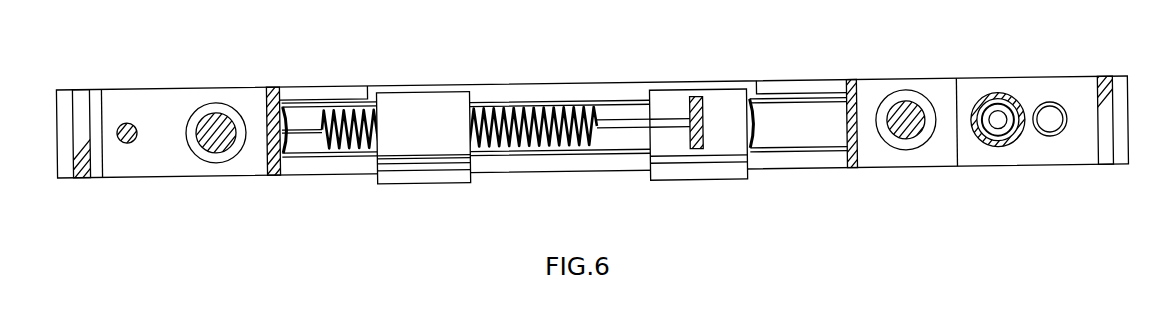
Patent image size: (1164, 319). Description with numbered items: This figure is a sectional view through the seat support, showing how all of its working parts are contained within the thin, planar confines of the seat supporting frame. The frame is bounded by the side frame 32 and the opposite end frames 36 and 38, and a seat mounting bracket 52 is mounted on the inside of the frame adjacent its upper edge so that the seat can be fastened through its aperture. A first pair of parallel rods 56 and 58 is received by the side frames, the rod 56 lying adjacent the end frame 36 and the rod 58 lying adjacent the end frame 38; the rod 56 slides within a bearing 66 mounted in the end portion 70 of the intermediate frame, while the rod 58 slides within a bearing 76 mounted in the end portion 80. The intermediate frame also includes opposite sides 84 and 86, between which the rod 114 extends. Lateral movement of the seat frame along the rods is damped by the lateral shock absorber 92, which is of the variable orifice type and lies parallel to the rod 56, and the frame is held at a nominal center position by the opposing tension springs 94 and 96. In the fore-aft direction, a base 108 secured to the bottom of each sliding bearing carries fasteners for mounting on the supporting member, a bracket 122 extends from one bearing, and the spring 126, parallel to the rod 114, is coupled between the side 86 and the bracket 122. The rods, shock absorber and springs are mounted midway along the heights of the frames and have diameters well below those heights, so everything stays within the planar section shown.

The side frame 32 is at (558, 167).
The end frame 36 is at (1105, 91).
The end frame 38 is at (83, 90).
The seat mounting bracket 52 is at (313, 99).
The rod 56 is at (905, 148).
The rod 58 is at (217, 124).
The bearing 66 is at (905, 108).
The end portion 70 is at (938, 164).
The bearing 76 is at (227, 159).
The end portion 80 is at (143, 164).
The side 84 is at (857, 172).
The side 86 is at (268, 93).
The lateral shock absorber 92 is at (1003, 159).
The spring 94 is at (1050, 118).
The spring 96 is at (127, 124).
The base 108 is at (443, 180).
The rod 114 is at (782, 146).
The bracket 122 is at (693, 115).
The spring 126 is at (507, 119).